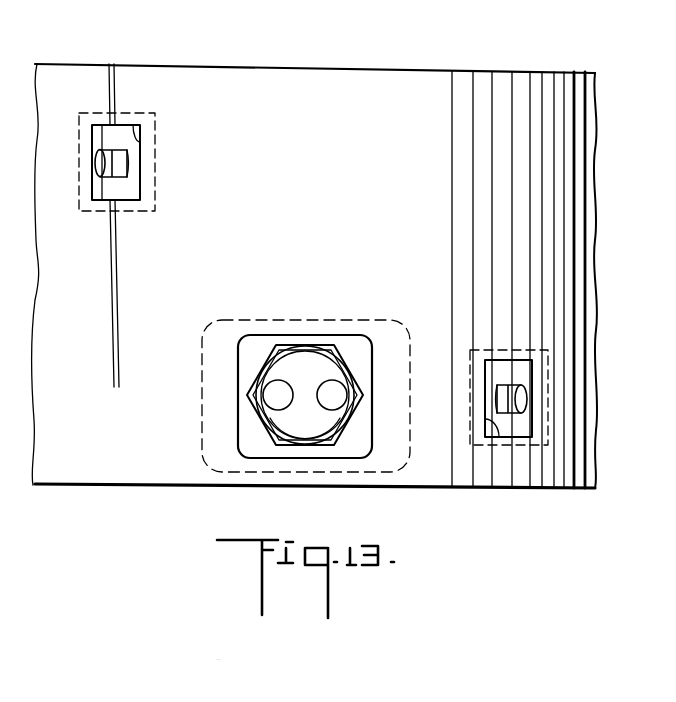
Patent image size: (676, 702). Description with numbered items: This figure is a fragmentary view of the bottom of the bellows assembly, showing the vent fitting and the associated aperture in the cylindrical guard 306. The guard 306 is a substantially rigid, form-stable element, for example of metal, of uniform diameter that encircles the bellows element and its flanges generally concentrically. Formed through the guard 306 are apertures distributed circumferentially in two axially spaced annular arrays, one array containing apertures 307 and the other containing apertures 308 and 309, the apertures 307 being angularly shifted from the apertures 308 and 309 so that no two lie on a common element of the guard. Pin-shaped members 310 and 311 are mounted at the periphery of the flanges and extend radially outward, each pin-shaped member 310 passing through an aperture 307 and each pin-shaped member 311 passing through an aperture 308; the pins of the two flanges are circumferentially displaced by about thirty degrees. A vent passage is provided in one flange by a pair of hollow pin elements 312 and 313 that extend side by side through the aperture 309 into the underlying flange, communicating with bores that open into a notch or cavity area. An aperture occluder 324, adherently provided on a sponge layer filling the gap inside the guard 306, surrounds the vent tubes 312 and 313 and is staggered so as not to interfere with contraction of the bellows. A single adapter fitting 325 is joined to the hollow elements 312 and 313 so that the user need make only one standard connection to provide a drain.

The guard 306 is at (132, 460).
The aperture 307 is at (133, 130).
The aperture 308 is at (497, 437).
The aperture 309 is at (248, 363).
The pin-shaped member 310 is at (113, 146).
The pin-shaped member 311 is at (518, 420).
The hollow pin element 312 is at (280, 381).
The hollow pin element 313 is at (338, 381).
The aperture occluder 324 is at (352, 447).
The adapter fitting 325 is at (258, 408).